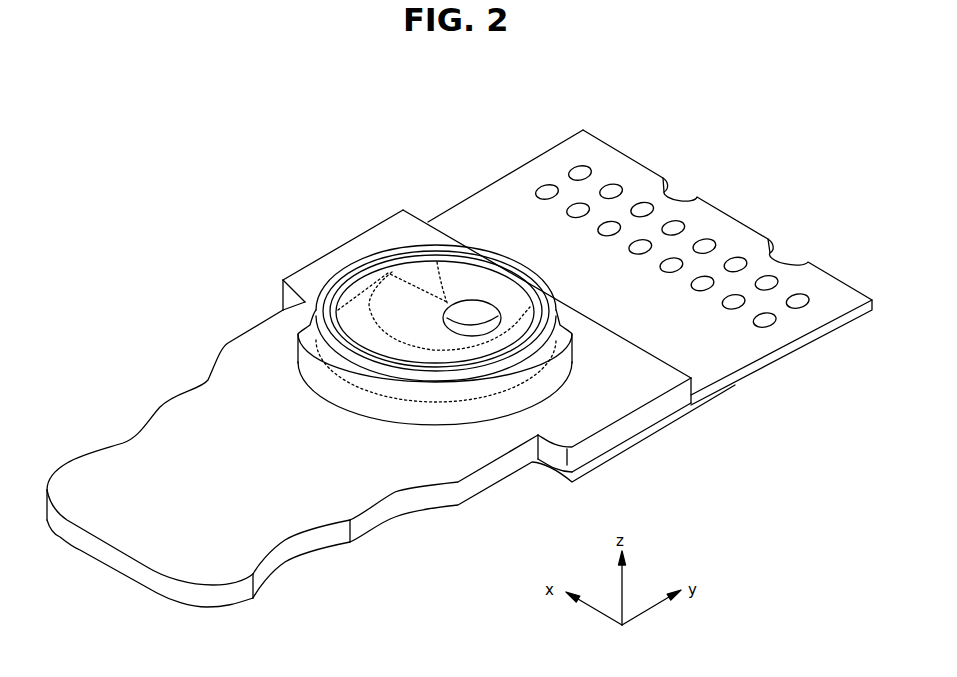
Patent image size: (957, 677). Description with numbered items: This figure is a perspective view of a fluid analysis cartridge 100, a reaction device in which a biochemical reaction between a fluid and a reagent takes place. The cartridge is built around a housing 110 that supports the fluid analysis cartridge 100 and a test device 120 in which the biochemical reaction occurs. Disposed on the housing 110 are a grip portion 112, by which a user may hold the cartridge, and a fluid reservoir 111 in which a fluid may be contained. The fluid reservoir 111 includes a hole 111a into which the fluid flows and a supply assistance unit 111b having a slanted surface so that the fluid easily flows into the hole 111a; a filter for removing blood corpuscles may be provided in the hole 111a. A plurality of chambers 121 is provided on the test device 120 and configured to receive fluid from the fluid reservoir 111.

The fluid analysis cartridge 100 is at (253, 97).
The housing 110 is at (402, 537).
The grip portion 112 is at (177, 430).
The fluid reservoir 111 is at (431, 226).
The hole 111a is at (488, 310).
The supply assistance unit 111b is at (405, 320).
The test device 120 is at (779, 385).
The chambers 121 is at (581, 153).